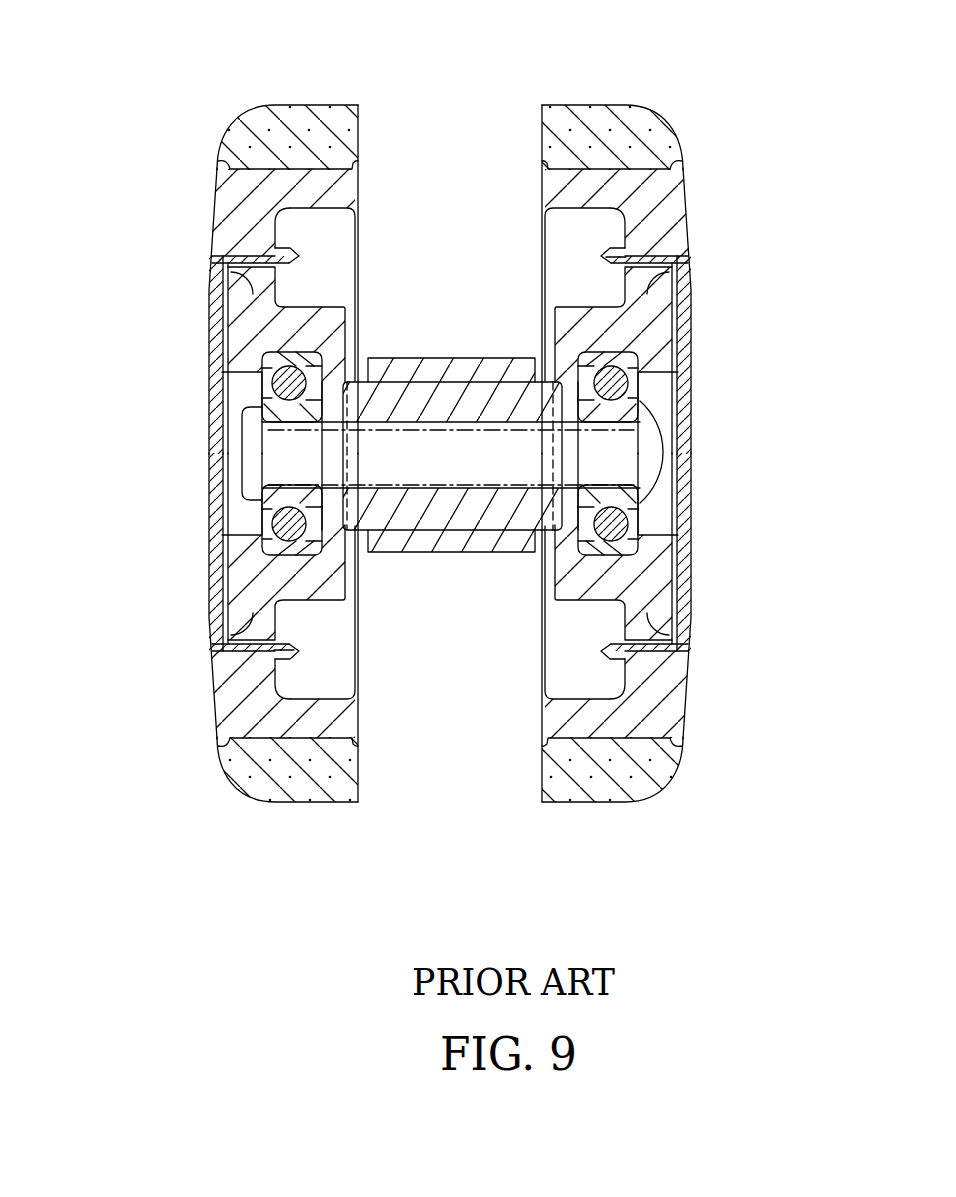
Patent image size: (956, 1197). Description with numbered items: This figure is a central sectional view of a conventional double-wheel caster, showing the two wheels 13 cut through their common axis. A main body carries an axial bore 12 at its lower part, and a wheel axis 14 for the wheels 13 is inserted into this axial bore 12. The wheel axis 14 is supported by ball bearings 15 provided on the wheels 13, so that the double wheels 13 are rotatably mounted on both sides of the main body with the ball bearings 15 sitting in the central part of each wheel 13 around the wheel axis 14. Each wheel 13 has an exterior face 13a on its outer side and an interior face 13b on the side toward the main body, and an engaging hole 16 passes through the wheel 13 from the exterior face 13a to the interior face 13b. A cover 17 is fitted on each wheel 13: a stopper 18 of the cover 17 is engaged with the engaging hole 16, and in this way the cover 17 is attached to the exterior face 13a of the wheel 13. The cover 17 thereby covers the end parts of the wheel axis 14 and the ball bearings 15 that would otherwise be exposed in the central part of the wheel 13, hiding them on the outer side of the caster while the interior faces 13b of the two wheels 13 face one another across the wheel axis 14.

The axial bore 12 is at (460, 355).
The wheel 13 is at (229, 120).
The exterior face 13a is at (213, 203).
The interior face 13b is at (278, 249).
The wheel axis 14 is at (676, 440).
The ball bearing 15 is at (248, 385).
The engaging hole 16 is at (232, 270).
The cover 17 is at (198, 458).
The stopper 18 is at (606, 257).